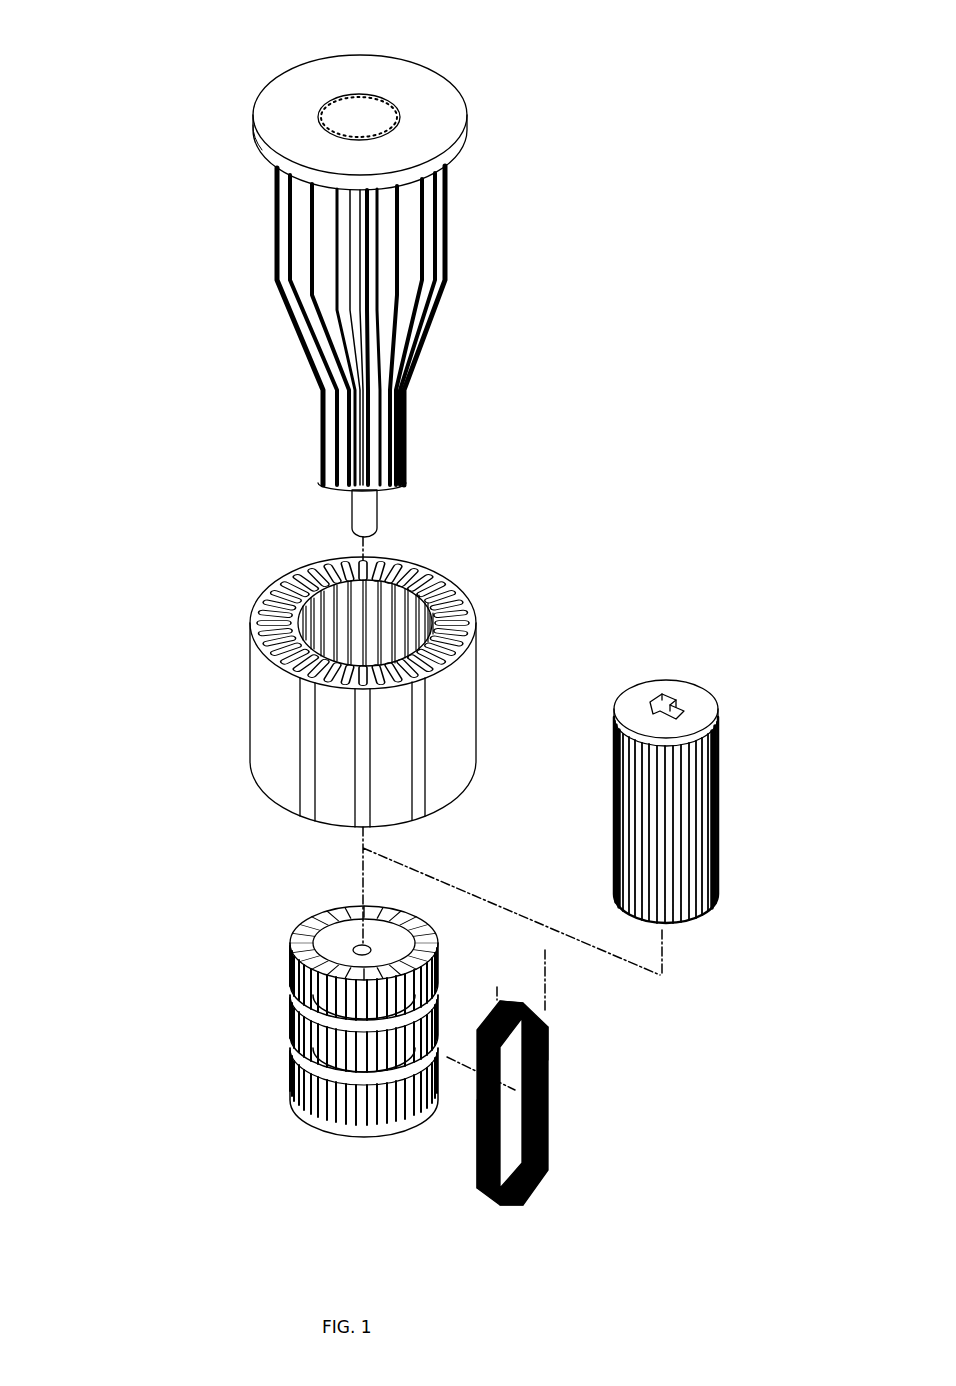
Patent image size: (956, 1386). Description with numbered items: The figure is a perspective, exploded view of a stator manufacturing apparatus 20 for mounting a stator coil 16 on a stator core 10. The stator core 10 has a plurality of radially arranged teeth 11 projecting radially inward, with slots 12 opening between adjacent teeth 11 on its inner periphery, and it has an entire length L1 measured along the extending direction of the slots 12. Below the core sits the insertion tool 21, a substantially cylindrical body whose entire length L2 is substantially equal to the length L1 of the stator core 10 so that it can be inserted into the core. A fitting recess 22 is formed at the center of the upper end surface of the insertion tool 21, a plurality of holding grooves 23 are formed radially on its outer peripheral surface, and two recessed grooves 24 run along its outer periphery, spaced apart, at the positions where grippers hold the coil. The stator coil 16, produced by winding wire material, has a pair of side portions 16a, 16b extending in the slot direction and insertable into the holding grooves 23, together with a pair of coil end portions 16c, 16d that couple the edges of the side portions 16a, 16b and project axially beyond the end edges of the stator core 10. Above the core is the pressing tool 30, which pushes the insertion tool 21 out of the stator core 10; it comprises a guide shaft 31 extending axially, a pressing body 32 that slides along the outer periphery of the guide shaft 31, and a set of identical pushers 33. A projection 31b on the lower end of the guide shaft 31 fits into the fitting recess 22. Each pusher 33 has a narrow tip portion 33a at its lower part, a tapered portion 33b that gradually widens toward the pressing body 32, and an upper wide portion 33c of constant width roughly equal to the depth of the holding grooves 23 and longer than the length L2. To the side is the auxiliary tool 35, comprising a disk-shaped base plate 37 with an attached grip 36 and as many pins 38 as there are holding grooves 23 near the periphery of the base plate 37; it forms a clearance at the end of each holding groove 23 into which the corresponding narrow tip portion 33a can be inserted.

The stator manufacturing apparatus 20 is at (80, 35).
The pressing tool 30 is at (455, 252).
The guide shaft 31 is at (383, 117).
The projection 31b is at (372, 525).
The pressing body 32 is at (433, 93).
The pusher 33 is at (368, 328).
The narrow tip portion 33a is at (405, 447).
The tapered portion 33b is at (428, 322).
The wide portion 33c is at (288, 133).
The stator core 10 is at (332, 685).
The teeth 11 is at (450, 590).
The slots 12 is at (470, 608).
The entire length of the stator core L1 is at (478, 630).
The auxiliary tool 35 is at (709, 795).
The grip 36 is at (680, 690).
The base plate 37 is at (647, 685).
The pins 38 is at (722, 888).
The insertion tool 21 is at (322, 1041).
The fitting recess 22 is at (358, 945).
The holding grooves 23 is at (290, 978).
The recessed grooves 24 is at (432, 1010).
The entire length of the insertion tool L2 is at (280, 935).
The stator coil 16 is at (510, 1078).
The one side portion 16a is at (477, 1170).
The other side portion 16b is at (548, 1040).
The coil end portion 16c is at (517, 1002).
The coil end portion 16d is at (530, 1195).